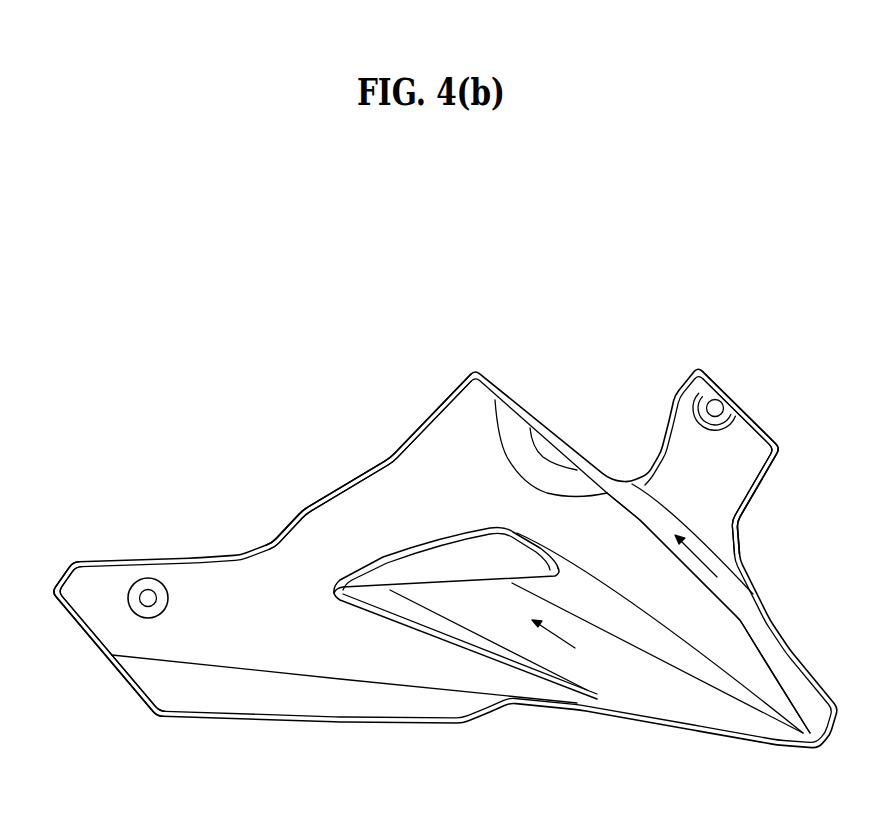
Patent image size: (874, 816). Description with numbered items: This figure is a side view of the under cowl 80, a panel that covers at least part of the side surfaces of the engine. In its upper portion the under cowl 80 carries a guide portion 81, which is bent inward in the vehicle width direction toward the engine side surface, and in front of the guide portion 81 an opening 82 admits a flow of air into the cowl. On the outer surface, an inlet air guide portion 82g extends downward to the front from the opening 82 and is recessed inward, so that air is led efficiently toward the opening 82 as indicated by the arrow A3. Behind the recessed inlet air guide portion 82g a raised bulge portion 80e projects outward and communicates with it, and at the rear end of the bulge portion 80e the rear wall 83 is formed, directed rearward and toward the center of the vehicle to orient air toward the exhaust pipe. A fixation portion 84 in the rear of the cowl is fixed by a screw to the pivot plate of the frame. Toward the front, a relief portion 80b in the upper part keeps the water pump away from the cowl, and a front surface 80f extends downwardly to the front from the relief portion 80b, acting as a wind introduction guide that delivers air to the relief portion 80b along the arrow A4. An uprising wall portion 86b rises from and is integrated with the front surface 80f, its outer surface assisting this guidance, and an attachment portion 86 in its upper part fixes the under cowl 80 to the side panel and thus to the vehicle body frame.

The under cowl 80 is at (192, 351).
The relief portion 80b is at (605, 422).
The bulge portion 80e is at (143, 677).
The front surface 80f is at (737, 598).
The guide portion 81 is at (327, 508).
The opening 82 is at (448, 560).
The inlet air guide portion 82g is at (478, 618).
The rear wall 83 is at (86, 646).
The fixation portion 84 is at (146, 590).
The attachment portion 86 is at (722, 406).
The uprising wall portion 86b is at (760, 447).
The arrow A3 is at (562, 633).
The arrow A4 is at (697, 552).